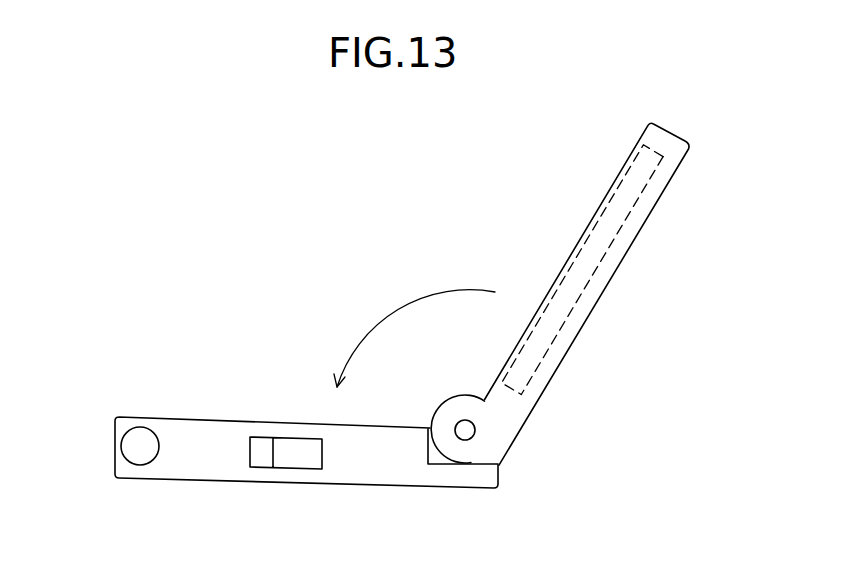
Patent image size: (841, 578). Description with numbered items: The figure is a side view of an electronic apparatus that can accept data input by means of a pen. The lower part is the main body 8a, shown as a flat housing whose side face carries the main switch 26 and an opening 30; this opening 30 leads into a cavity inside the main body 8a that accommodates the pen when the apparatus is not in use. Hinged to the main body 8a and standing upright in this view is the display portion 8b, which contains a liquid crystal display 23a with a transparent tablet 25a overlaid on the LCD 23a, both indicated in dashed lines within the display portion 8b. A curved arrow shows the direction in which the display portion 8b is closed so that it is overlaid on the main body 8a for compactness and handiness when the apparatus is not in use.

The main body 8a is at (205, 492).
The display portion 8b is at (585, 338).
The opening 30 is at (143, 450).
The main switch 26 is at (292, 455).
The transparent tablet 25a is at (607, 197).
The liquid crystal display 23a is at (595, 258).